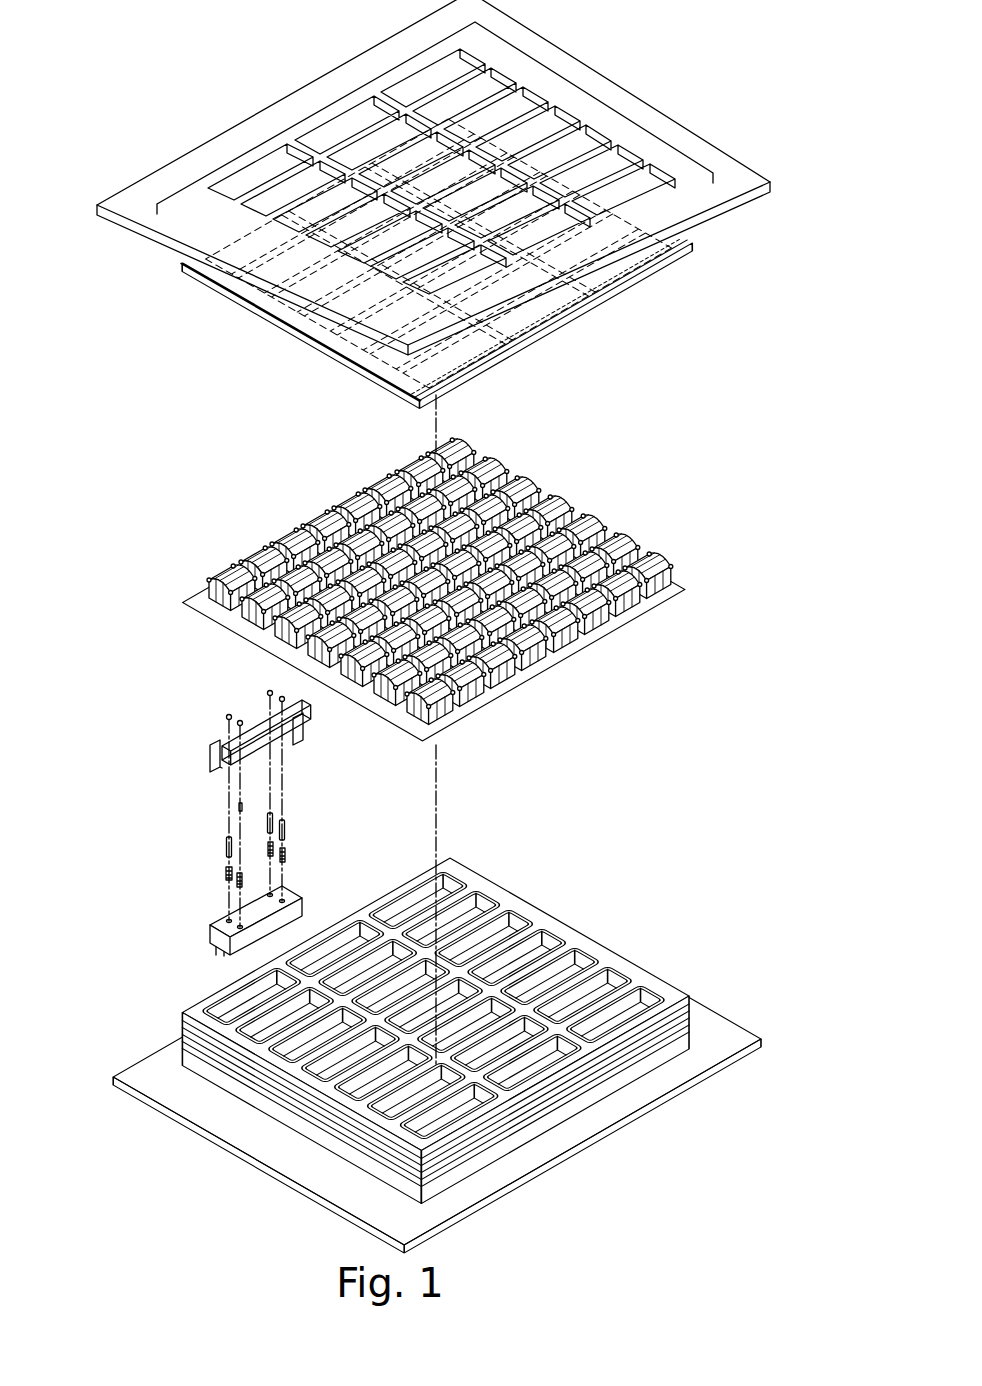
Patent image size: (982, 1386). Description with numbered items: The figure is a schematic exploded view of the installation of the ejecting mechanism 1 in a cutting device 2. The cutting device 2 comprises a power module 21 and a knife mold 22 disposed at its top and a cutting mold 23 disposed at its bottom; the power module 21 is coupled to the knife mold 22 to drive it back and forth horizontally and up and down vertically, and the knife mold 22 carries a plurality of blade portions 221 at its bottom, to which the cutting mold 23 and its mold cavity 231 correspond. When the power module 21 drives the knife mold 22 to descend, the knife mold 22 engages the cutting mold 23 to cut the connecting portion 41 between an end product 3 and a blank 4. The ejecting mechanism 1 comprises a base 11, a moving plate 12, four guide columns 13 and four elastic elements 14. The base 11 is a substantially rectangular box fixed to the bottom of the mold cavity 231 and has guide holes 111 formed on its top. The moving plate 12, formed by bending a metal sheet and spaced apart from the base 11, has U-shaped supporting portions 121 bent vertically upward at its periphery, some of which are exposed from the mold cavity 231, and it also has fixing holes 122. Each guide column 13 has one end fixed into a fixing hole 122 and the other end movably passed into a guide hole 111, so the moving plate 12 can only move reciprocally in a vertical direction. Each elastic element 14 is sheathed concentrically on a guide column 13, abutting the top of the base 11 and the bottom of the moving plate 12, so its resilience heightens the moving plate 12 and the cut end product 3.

The ejecting mechanism 1 is at (251, 807).
The base 11 is at (282, 897).
The guide holes 111 is at (284, 895).
The moving plate 12 is at (260, 715).
The supporting portions 121 is at (298, 724).
The fixing holes 122 is at (222, 748).
The guide columns 13 is at (283, 822).
The elastic elements 14 is at (286, 850).
The cutting device 2 is at (442, 626).
The power module 21 is at (423, 204).
The knife mold 22 is at (632, 112).
The blade portions 221 is at (632, 283).
The cutting mold 23 is at (437, 1055).
The mold cavity 231 is at (449, 1110).
The end product 3 is at (440, 586).
The blank 4 is at (670, 590).
The connecting portion 41 is at (508, 679).